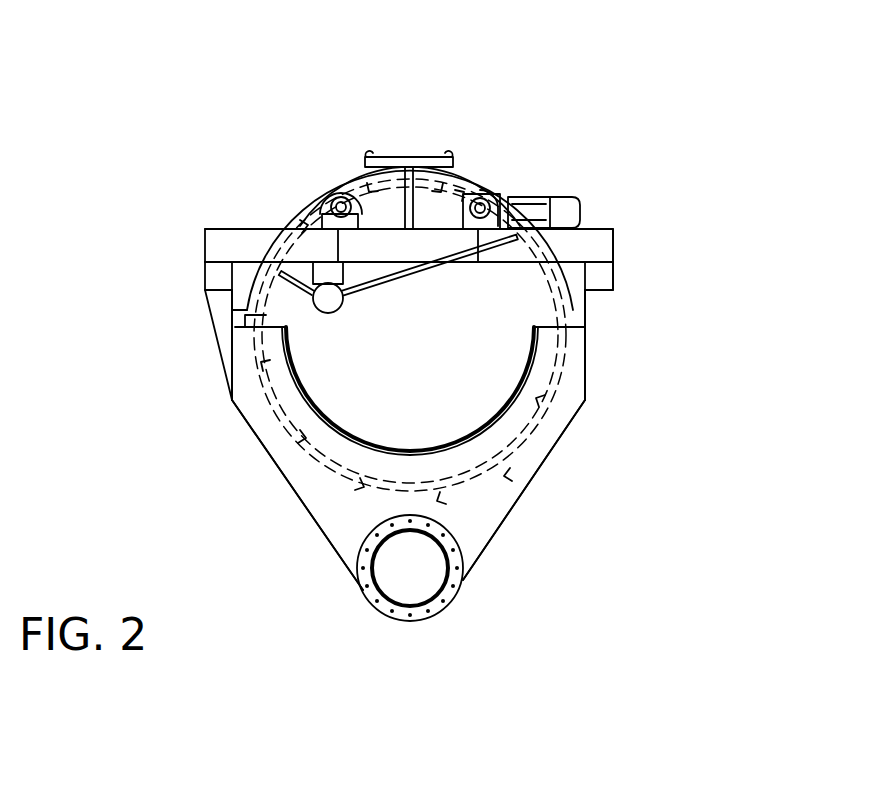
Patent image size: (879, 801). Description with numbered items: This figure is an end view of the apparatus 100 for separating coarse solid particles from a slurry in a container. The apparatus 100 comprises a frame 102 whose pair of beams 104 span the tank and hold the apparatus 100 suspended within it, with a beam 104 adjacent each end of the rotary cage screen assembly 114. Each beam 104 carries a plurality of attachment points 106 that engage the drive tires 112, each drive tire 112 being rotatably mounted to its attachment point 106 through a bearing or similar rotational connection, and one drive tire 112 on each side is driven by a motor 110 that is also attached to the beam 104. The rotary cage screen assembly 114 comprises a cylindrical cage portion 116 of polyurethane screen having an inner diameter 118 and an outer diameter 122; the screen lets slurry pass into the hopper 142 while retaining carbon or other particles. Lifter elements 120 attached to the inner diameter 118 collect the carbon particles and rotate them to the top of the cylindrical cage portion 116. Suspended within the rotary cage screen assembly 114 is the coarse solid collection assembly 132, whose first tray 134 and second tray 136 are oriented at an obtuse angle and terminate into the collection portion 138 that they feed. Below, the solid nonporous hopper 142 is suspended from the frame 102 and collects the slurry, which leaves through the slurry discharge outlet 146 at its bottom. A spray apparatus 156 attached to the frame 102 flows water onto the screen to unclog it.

The apparatus 100 is at (700, 128).
The frame 102 is at (205, 216).
The beam 104 is at (230, 228).
The attachment point 106 is at (318, 217).
The motor 110 is at (573, 196).
The drive tire 112 is at (345, 165).
The rotary cage screen assembly 114 is at (490, 478).
The cylindrical cage portion 116 is at (580, 344).
The inner diameter 118 is at (550, 388).
The lifter element 120 is at (247, 311).
The outer diameter 122 is at (538, 427).
The course solid collection assembly 132 is at (357, 312).
The first tray 134 is at (423, 280).
The second tray 136 is at (302, 290).
The collection portion 138 is at (314, 304).
The hopper 142 is at (307, 514).
The slurry discharge outlet 146 is at (434, 579).
The spray apparatus 156 is at (438, 151).